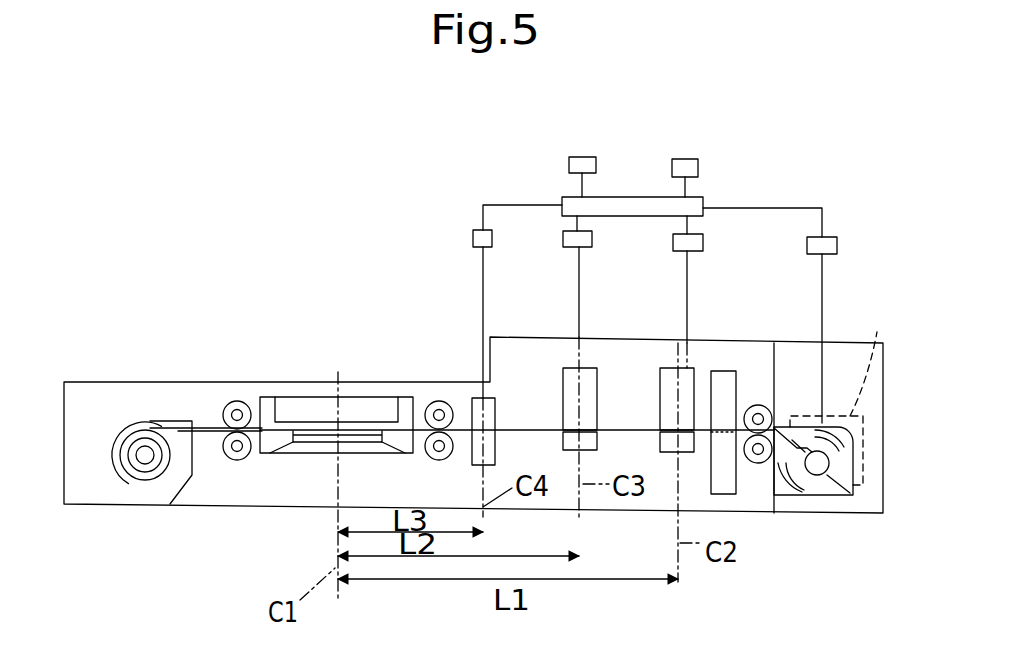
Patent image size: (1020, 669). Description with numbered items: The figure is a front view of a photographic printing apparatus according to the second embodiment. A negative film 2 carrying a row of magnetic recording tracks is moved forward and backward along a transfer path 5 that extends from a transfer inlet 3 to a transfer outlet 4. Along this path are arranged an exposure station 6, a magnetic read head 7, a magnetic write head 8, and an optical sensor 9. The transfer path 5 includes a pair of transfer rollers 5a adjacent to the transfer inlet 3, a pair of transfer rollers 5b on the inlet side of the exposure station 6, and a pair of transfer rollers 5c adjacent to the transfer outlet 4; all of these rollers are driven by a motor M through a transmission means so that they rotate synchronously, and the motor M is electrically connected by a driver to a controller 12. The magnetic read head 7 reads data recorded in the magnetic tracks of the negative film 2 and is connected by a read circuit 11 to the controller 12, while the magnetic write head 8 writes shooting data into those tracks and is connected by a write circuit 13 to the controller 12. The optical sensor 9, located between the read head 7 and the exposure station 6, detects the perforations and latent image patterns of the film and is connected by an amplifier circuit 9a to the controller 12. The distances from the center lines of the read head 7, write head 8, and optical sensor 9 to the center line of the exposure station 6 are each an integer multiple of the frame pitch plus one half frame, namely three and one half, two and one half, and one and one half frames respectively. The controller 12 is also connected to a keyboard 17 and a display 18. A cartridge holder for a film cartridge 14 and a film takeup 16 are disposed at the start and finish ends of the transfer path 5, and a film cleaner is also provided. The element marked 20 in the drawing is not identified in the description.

The negative film 2 is at (705, 415).
The transfer inlet 3 is at (782, 423).
The transfer outlet 4 is at (215, 402).
The transfer path 5 is at (458, 415).
The transfer rollers 5a is at (747, 462).
The transfer rollers 5b is at (430, 466).
The transfer rollers 5c is at (222, 434).
The exposure station 6 is at (315, 447).
The magnetic read head 7 is at (688, 366).
The magnetic write head 8 is at (594, 366).
The optical sensor 9 is at (476, 400).
The amplifier circuit 9a is at (473, 238).
The read circuit 11 is at (703, 238).
The controller 12 is at (703, 198).
The write circuit 13 is at (563, 235).
The film cartridge 14 is at (830, 424).
The film takeup 16 is at (137, 480).
The keyboard 17 is at (569, 158).
The display 18 is at (692, 160).
The motor drive circuit 20 is at (832, 238).
The motor M is at (843, 393).